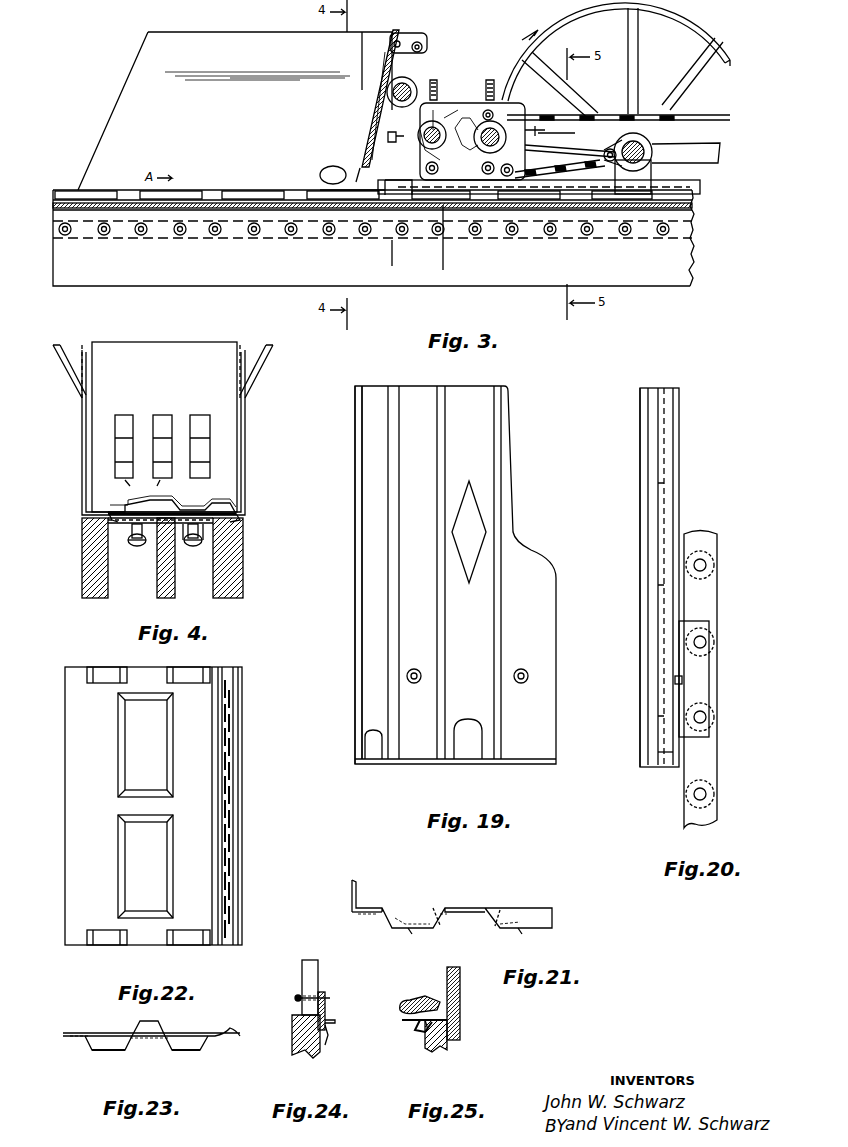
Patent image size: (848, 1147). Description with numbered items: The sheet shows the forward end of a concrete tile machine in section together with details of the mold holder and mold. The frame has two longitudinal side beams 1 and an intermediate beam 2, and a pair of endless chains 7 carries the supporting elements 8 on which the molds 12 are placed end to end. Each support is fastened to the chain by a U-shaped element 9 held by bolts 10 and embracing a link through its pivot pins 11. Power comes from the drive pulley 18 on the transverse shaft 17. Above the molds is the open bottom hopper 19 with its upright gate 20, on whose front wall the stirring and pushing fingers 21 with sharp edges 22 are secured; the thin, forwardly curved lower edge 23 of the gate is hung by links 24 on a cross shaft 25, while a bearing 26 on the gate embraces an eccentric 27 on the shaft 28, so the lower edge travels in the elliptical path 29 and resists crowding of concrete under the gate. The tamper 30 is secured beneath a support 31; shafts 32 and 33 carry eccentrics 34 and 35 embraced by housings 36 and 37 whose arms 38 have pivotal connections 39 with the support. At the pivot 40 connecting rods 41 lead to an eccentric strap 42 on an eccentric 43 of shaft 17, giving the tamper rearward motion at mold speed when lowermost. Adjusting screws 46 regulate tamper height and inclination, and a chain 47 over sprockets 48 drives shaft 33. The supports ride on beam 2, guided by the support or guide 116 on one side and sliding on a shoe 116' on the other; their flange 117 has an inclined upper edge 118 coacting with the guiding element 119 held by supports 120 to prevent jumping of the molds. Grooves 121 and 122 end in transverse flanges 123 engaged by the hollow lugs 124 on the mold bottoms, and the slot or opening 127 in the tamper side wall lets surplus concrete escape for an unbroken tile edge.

In FIG. 4, the longitudinal side beams 1 is at (82, 573).
In FIG. 24, the longitudinal side beams 1 is at (293, 1045).
In FIG. 25, the longitudinal side beams 1 is at (447, 1050).
In FIG. 3, the intermediate beam 2 is at (150, 286).
In FIG. 4, the intermediate beam 2 is at (157, 589).
In FIG. 3, the endless chains 7 is at (228, 232).
In FIG. 4, the endless chains 7 is at (135, 546).
In FIG. 20, the endless chains 7 is at (712, 597).
In FIG. 3, the supporting elements 8 is at (270, 215).
In FIG. 4, the supporting elements 8 is at (220, 527).
In FIG. 19, the supporting elements 8 is at (546, 645).
In FIG. 20, the supporting elements 8 is at (658, 564).
In FIG. 21, the supporting elements 8 is at (462, 908).
In FIG. 24, the supporting elements 8 is at (336, 1021).
In FIG. 4, the U-shaped elements 9 is at (182, 545).
In FIG. 20, the U-shaped elements 9 is at (704, 680).
In FIG. 20, the bolts 10 is at (686, 678).
In FIG. 20, the pivot pins 11 is at (710, 648).
In FIG. 3, the molds 12 is at (254, 184).
In FIG. 4, the molds 12 is at (190, 505).
In FIG. 22, the molds 12 is at (68, 812).
In FIG. 23, the molds 12 is at (138, 1045).
In FIG. 25, the molds 12 is at (402, 1021).
In FIG. 3, the transverse shaft 17 is at (636, 171).
In FIG. 3, the drive pulley 18 is at (688, 25).
In FIG. 3, the hopper 19 is at (270, 42).
In FIG. 4, the hopper 19 is at (245, 443).
In FIG. 3, the gate 20 is at (370, 92).
In FIG. 4, the gate 20 is at (230, 420).
In FIG. 3, the stirring and pushing fingers 21 is at (368, 120).
In FIG. 4, the stirring and pushing fingers 21 is at (160, 418).
In FIG. 3, the sharp edges 22 is at (348, 167).
In FIG. 4, the sharp edges 22 is at (142, 488).
In FIG. 3, the lower edge 23 is at (342, 183).
In FIG. 4, the lower edge 23 is at (230, 500).
In FIG. 3, the links 24 is at (385, 254).
In FIG. 3, the cross shaft 25 is at (425, 45).
In FIG. 3, the bearing 26 is at (410, 82).
In FIG. 3, the eccentric 27 is at (385, 82).
In FIG. 3, the transverse shaft 28 is at (436, 78).
In FIG. 3, the elliptical path 29 is at (330, 166).
In FIG. 3, the welt strip 30 is at (427, 210).
In FIG. 4, the welt strip 30 is at (238, 512).
In FIG. 25, the welt strip 30 is at (412, 997).
In FIG. 3, the tamper support 31 is at (483, 171).
In FIG. 3, the transverse shaft 32 is at (446, 128).
In FIG. 3, the transverse shaft 33 is at (500, 112).
In FIG. 3, the eccentric 34 is at (445, 110).
In FIG. 3, the eccentric 35 is at (506, 132).
In FIG. 3, the housing 36 is at (420, 140).
In FIG. 3, the housing 37 is at (550, 130).
In FIG. 3, the arms 38 is at (466, 125).
In FIG. 3, the pivotal connections 39 is at (514, 200).
In FIG. 3, the pivot 40 is at (539, 187).
In FIG. 3, the connecting rods 41 is at (572, 165).
In FIG. 3, the eccentric strap 42 is at (660, 150).
In FIG. 3, the eccentric 43 is at (652, 165).
In FIG. 3, the adjusting screws 46 is at (489, 78).
In FIG. 3, the chain 47 is at (600, 115).
In FIG. 3, the sprockets 48 is at (528, 152).
In FIG. 4, the support or guide 116 is at (111, 543).
In FIG. 24, the support or guide 116 is at (335, 1045).
In FIG. 4, the shoe 116' is at (263, 521).
In FIG. 25, the shoe 116' is at (412, 1043).
In FIG. 19, the flange 117 is at (360, 716).
In FIG. 20, the flange 117 is at (648, 612).
In FIG. 21, the flange 117 is at (352, 906).
In FIG. 19, the inclined upper edge 118 is at (355, 655).
In FIG. 20, the inclined upper edge 118 is at (644, 512).
In FIG. 21, the inclined upper edge 118 is at (356, 882).
In FIG. 3, the guiding element 119 is at (578, 190).
In FIG. 24, the guiding element 119 is at (326, 996).
In FIG. 24, the supports 120 is at (302, 972).
In FIG. 21, the depression or groove 121 is at (435, 905).
In FIG. 21, the depression or groove 122 is at (503, 912).
In FIG. 19, the transverse flanges 123 is at (415, 764).
In FIG. 20, the transverse flanges 123 is at (664, 768).
In FIG. 21, the transverse flanges 123 is at (408, 908).
In FIG. 22, the lugs 124 is at (108, 670).
In FIG. 23, the lugs 124 is at (104, 1052).
In FIG. 25, the slot or opening 127 is at (460, 1026).